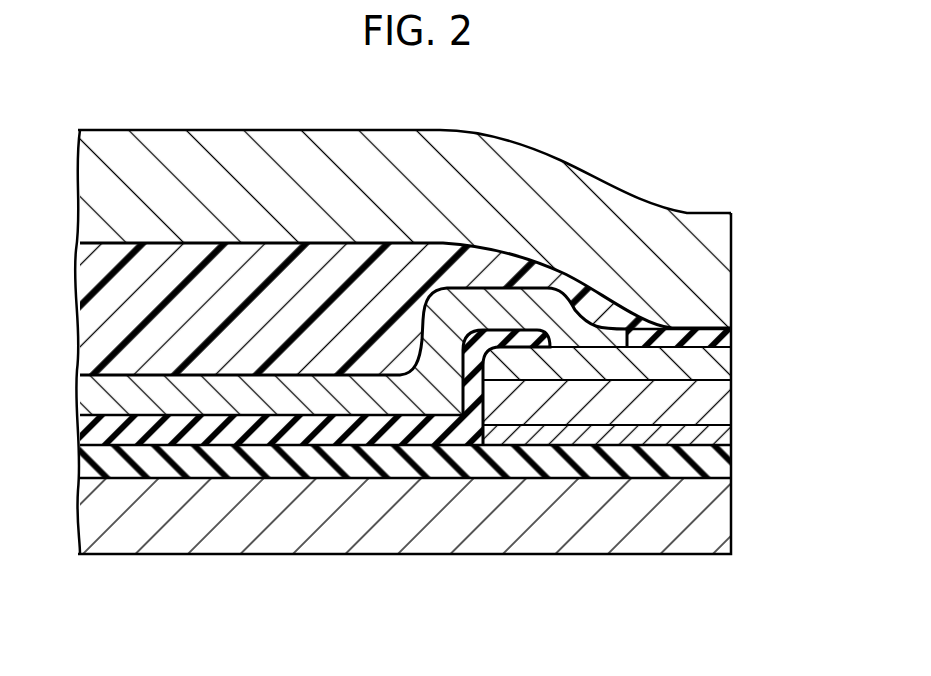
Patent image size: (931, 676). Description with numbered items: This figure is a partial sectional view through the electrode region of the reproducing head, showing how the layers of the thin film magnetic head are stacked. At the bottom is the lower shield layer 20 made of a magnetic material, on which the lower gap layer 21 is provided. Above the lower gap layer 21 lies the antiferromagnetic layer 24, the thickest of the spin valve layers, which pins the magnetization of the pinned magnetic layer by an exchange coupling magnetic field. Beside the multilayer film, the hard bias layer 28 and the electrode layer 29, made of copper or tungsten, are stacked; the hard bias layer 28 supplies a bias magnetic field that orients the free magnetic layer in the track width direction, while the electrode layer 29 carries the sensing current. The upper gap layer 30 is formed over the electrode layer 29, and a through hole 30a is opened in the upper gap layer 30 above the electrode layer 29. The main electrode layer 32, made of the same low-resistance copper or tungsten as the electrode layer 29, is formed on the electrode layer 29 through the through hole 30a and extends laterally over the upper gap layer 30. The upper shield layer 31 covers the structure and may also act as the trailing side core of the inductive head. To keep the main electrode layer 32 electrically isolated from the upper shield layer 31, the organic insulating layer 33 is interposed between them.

The lower shield layer 20 is at (473, 515).
The lower gap layer 21 is at (347, 457).
The antiferromagnetic layer 24 is at (718, 435).
The hard bias layer 28 is at (718, 407).
The electrode layer 29 is at (713, 368).
The upper gap layer 30 is at (258, 428).
The through hole 30a is at (580, 338).
The upper shield layer 31 is at (625, 248).
The main electrode layer 32 is at (153, 392).
The organic insulating layer 33 is at (210, 290).